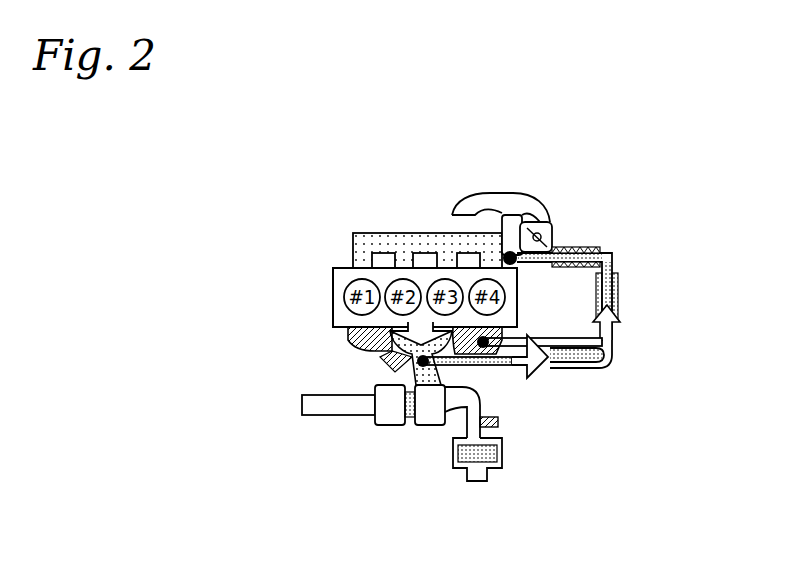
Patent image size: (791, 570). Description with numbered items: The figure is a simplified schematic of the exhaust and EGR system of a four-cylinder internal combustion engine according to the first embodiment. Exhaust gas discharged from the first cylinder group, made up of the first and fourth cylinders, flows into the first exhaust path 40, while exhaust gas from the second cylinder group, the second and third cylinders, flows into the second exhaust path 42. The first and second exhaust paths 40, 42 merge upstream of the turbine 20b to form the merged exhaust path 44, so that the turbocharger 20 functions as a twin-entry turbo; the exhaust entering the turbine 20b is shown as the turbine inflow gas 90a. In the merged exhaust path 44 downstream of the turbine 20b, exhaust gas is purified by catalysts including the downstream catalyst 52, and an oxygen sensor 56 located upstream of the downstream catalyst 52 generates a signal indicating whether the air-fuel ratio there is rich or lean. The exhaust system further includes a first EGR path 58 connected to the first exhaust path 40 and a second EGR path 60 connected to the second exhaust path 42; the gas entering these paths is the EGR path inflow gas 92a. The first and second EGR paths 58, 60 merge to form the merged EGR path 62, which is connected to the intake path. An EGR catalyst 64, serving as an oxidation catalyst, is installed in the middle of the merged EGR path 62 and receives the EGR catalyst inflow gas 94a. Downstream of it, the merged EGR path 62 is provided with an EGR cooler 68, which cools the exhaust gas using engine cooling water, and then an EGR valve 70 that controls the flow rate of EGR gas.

The turbocharger 20 is at (378, 447).
The turbine 20b is at (432, 425).
The first exhaust path 40 is at (348, 342).
The second exhaust path 42 is at (400, 366).
The merged exhaust path 44 is at (478, 400).
The downstream catalyst 52 is at (495, 463).
The oxygen sensor 56 is at (498, 423).
The first EGR path 58 is at (548, 334).
The second EGR path 60 is at (611, 369).
The merged EGR path 62 is at (612, 256).
The EGR catalyst 64 is at (618, 298).
The EGR cooler 68 is at (598, 247).
The EGR valve 70 is at (508, 223).
The turbine inflow gas 90a is at (390, 323).
The EGR path inflow gas 92a is at (546, 369).
The EGR catalyst inflow gas 94a is at (620, 333).